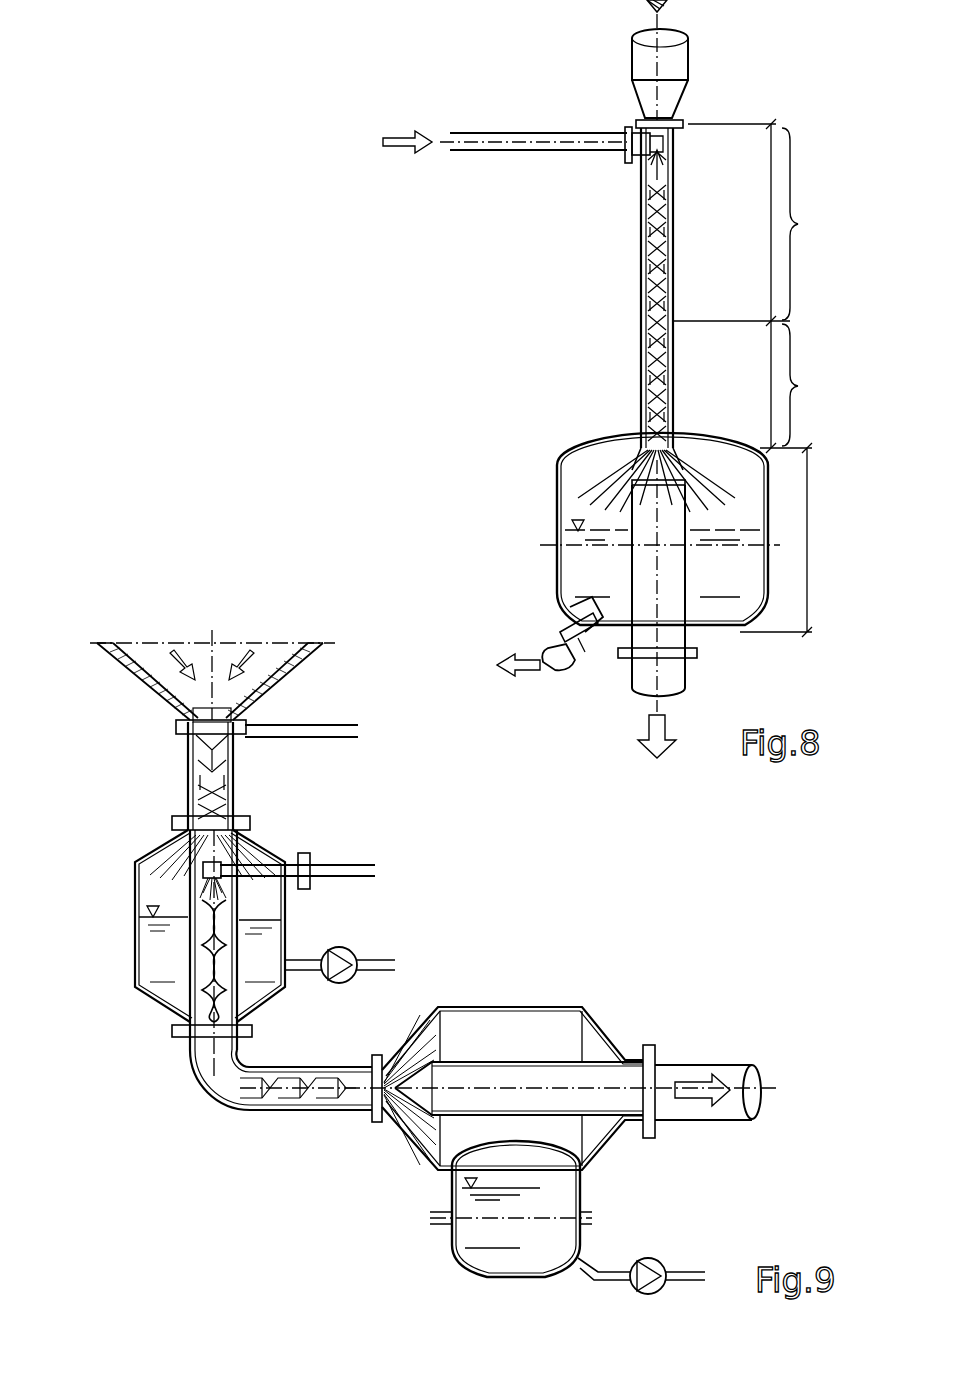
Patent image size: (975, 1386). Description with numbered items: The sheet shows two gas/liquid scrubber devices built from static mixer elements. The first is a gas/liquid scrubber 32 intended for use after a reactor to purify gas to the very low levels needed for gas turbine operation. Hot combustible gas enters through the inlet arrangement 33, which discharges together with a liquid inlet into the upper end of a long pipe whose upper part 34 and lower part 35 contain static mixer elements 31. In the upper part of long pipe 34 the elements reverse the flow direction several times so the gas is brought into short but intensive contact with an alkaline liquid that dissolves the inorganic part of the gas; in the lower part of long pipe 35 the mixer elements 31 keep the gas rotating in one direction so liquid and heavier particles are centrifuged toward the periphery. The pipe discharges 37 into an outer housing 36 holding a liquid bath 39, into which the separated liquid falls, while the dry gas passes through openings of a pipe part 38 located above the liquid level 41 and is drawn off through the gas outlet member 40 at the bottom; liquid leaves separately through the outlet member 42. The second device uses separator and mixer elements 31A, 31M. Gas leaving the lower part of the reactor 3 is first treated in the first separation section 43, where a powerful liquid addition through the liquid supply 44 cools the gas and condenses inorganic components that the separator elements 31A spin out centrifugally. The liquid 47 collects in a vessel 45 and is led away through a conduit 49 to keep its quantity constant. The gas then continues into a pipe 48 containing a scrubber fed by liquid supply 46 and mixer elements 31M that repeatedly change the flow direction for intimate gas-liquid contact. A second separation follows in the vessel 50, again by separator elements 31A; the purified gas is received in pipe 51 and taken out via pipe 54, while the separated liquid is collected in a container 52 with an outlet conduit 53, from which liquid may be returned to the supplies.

In FIG. 9, the reactor 3 is at (150, 667).
In FIG. 8, the static mixer elements 31 is at (655, 268).
In FIG. 9, the separator elements 31A is at (235, 775).
In FIG. 9, the mixer elements 31M is at (200, 953).
In FIG. 8, the gas/liquid scrubber 32 is at (563, 379).
In FIG. 8, the inlet arrangement for combustible gas 33 is at (678, 62).
In FIG. 8, the upper part of long pipe 34 is at (523, 150).
In FIG. 8, the lower part of long pipe 35 is at (838, 207).
In FIG. 8, the outer housing 36 is at (773, 481).
In FIG. 8, the discharge of pipe 37 is at (700, 516).
In FIG. 8, the pipe part 38 is at (650, 487).
In FIG. 8, the liquid bath 39 is at (735, 583).
In FIG. 8, the outlet member for gas 40 is at (674, 672).
In FIG. 8, the liquid level 41 is at (577, 535).
In FIG. 8, the outlet member for liquid 42 is at (560, 613).
In FIG. 9, the first separation section 43 is at (184, 765).
In FIG. 9, the liquid supply 44 is at (322, 725).
In FIG. 9, the vessel 45 is at (130, 882).
In FIG. 9, the liquid supply 46 is at (358, 872).
In FIG. 9, the liquid 47 is at (270, 948).
In FIG. 9, the pipe 48 is at (190, 884).
In FIG. 9, the conduit 49 is at (375, 965).
In FIG. 9, the vessel 50 is at (513, 1004).
In FIG. 9, the pipe 51 is at (543, 1086).
In FIG. 9, the container 52 is at (446, 1194).
In FIG. 9, the outlet conduit 53 is at (615, 1265).
In FIG. 9, the pipe 54 is at (670, 1078).